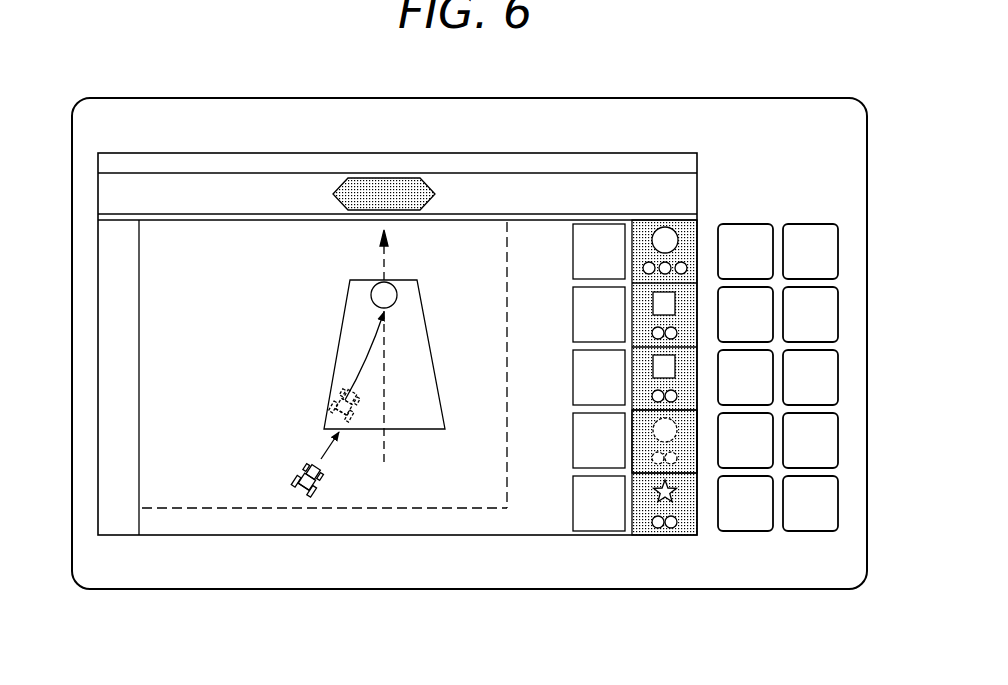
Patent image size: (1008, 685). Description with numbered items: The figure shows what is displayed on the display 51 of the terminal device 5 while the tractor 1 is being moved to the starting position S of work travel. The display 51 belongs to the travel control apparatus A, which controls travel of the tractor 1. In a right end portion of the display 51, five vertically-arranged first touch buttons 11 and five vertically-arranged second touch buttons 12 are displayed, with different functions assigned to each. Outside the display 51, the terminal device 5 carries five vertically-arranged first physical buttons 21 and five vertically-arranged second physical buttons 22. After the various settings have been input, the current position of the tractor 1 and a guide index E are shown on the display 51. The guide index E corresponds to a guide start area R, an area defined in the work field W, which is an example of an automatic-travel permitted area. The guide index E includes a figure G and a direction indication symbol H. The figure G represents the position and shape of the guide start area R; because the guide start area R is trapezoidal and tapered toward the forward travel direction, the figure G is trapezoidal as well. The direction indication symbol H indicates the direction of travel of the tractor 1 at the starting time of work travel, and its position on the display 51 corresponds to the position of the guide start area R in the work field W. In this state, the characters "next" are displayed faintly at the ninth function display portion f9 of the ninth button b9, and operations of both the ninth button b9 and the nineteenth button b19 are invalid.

The terminal device 5 is at (112, 76).
The display 51 is at (411, 338).
The travel control apparatus A is at (411, 338).
The first touch buttons 11 is at (603, 207).
The second touch buttons 12 is at (653, 348).
The first physical buttons 21 is at (745, 217).
The second physical buttons 22 is at (834, 352).
The tractor 1 is at (304, 470).
The guide index E is at (322, 294).
The figure G is at (440, 391).
The direction indication symbol H is at (385, 266).
The starting position S is at (384, 295).
The guide start area R is at (347, 362).
The work field W is at (507, 366).
The ninth button b9 is at (642, 448).
The ninth function display portion f9 is at (698, 458).
The nineteenth button b19 is at (820, 450).